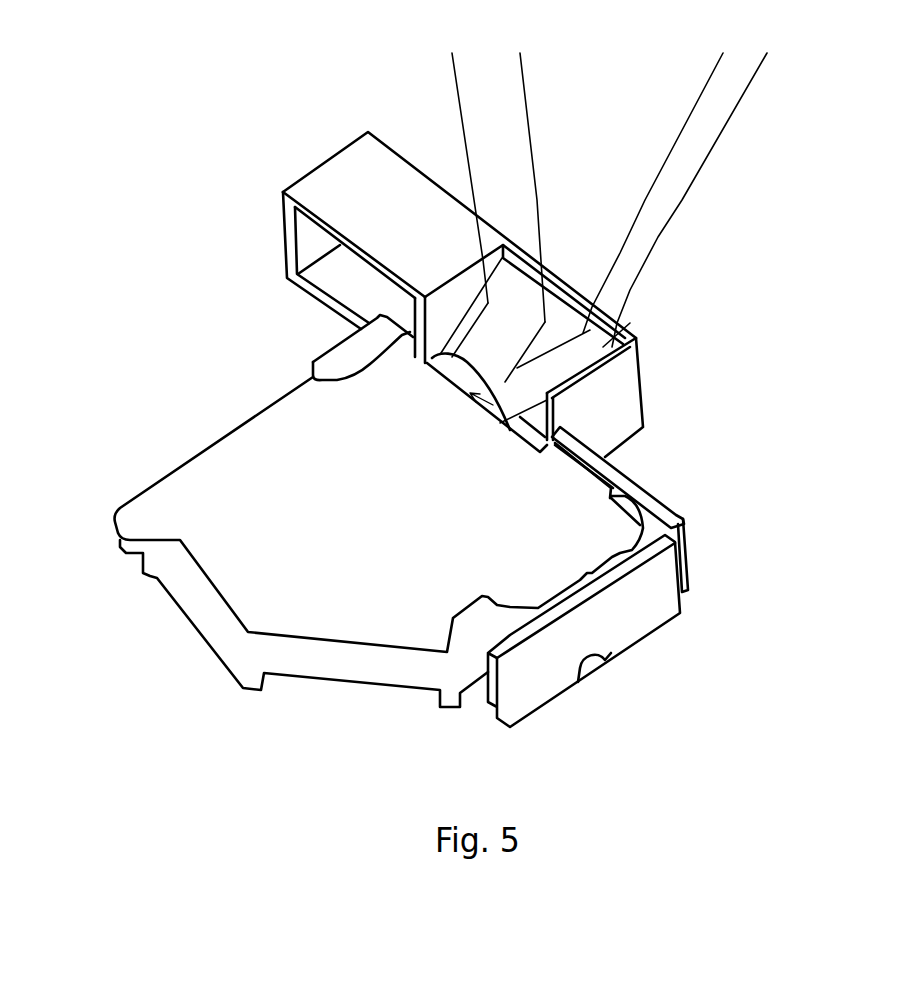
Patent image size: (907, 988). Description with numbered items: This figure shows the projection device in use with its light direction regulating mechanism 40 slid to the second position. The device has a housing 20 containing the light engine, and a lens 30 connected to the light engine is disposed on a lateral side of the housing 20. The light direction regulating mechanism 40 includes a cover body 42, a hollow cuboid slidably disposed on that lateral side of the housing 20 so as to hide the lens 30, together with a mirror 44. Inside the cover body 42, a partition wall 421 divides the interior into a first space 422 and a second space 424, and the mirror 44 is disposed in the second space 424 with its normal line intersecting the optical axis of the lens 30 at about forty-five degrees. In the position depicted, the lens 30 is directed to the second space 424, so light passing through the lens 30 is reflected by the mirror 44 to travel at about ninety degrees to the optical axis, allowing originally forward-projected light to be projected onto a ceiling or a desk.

The housing 20 is at (525, 550).
The lens 30 is at (603, 458).
The light direction regulating mechanism 40 is at (499, 246).
The cover body 42 is at (446, 246).
The mirror 44 is at (543, 343).
The partition wall 421 is at (450, 310).
The first space 422 is at (333, 277).
The second space 424 is at (565, 300).